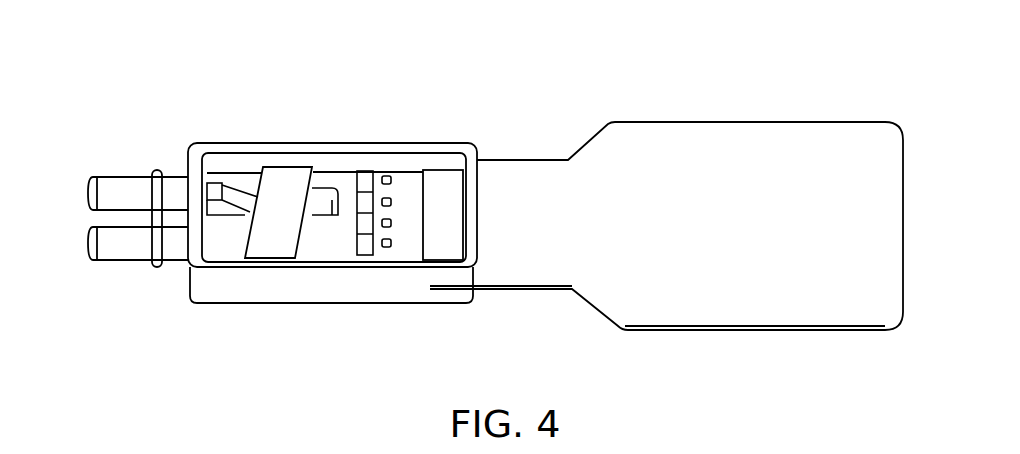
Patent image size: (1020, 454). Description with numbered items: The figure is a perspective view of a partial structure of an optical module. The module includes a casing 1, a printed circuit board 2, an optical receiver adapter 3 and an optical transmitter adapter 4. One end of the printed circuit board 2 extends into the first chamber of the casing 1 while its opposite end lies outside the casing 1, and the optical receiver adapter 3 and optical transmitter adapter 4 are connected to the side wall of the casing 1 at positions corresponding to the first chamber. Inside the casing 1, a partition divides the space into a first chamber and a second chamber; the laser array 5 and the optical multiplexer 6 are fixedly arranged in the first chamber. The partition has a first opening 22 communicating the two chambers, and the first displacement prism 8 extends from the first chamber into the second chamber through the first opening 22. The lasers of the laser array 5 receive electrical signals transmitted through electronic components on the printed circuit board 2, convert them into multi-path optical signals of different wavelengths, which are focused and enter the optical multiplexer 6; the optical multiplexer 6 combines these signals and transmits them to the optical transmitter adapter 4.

The casing 1 is at (365, 140).
The printed circuit board 2 is at (678, 153).
The optical receiver adapter 3 is at (138, 178).
The optical transmitter adapter 4 is at (138, 248).
The laser array 5 is at (395, 232).
The optical multiplexer 6 is at (280, 222).
The first displacement prism 8 is at (233, 197).
The first opening 22 is at (250, 195).